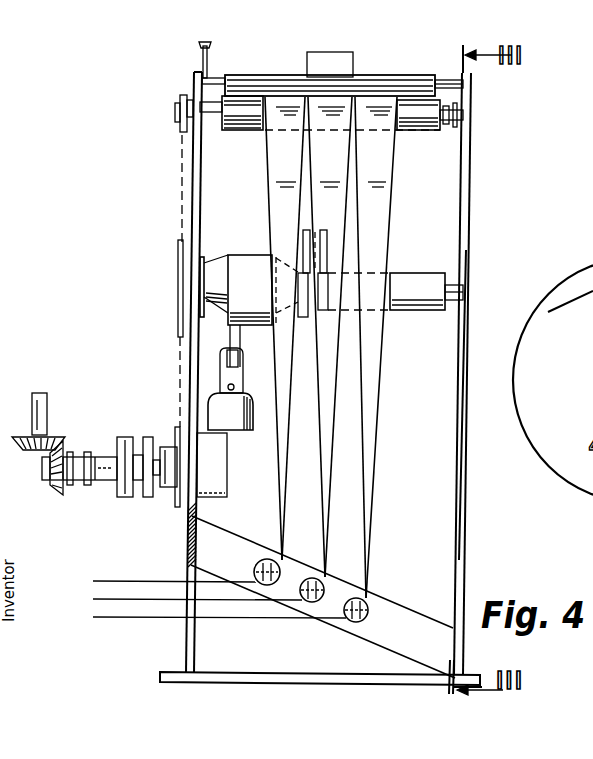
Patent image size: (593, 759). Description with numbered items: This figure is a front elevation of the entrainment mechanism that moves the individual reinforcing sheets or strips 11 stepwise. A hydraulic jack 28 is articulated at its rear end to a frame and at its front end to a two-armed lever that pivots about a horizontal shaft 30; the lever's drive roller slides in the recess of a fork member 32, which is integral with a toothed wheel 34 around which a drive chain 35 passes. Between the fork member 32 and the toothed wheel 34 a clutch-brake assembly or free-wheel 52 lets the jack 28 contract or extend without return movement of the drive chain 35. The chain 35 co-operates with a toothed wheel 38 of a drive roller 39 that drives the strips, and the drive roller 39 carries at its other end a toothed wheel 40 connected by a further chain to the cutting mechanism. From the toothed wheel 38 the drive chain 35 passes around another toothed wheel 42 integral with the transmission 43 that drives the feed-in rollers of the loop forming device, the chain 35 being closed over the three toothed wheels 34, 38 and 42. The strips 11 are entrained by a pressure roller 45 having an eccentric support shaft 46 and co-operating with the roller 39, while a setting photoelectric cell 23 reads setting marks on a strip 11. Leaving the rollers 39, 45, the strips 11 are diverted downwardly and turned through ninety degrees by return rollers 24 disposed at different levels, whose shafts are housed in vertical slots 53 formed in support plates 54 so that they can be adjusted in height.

The reinforcing sheets 11 is at (282, 425).
The setting photoelectric cell 23 is at (330, 59).
The return rollers 24 is at (347, 620).
The hydraulic jack 28 is at (254, 428).
The horizontal shaft 30 is at (308, 307).
The fork member 32 is at (303, 247).
The toothed wheel 34 is at (180, 252).
The drive chain 35 is at (177, 362).
The toothed wheel 38 is at (178, 99).
The drive roller 39 is at (240, 122).
The toothed wheel 40 is at (438, 126).
The toothed wheel 42 is at (173, 507).
The transmission 43 is at (124, 500).
The pressure roller 45 is at (390, 82).
The eccentric support shaft 46 is at (212, 80).
The free-wheel 52 is at (248, 262).
The vertical slots 53 is at (267, 558).
The support plates 54 is at (410, 625).